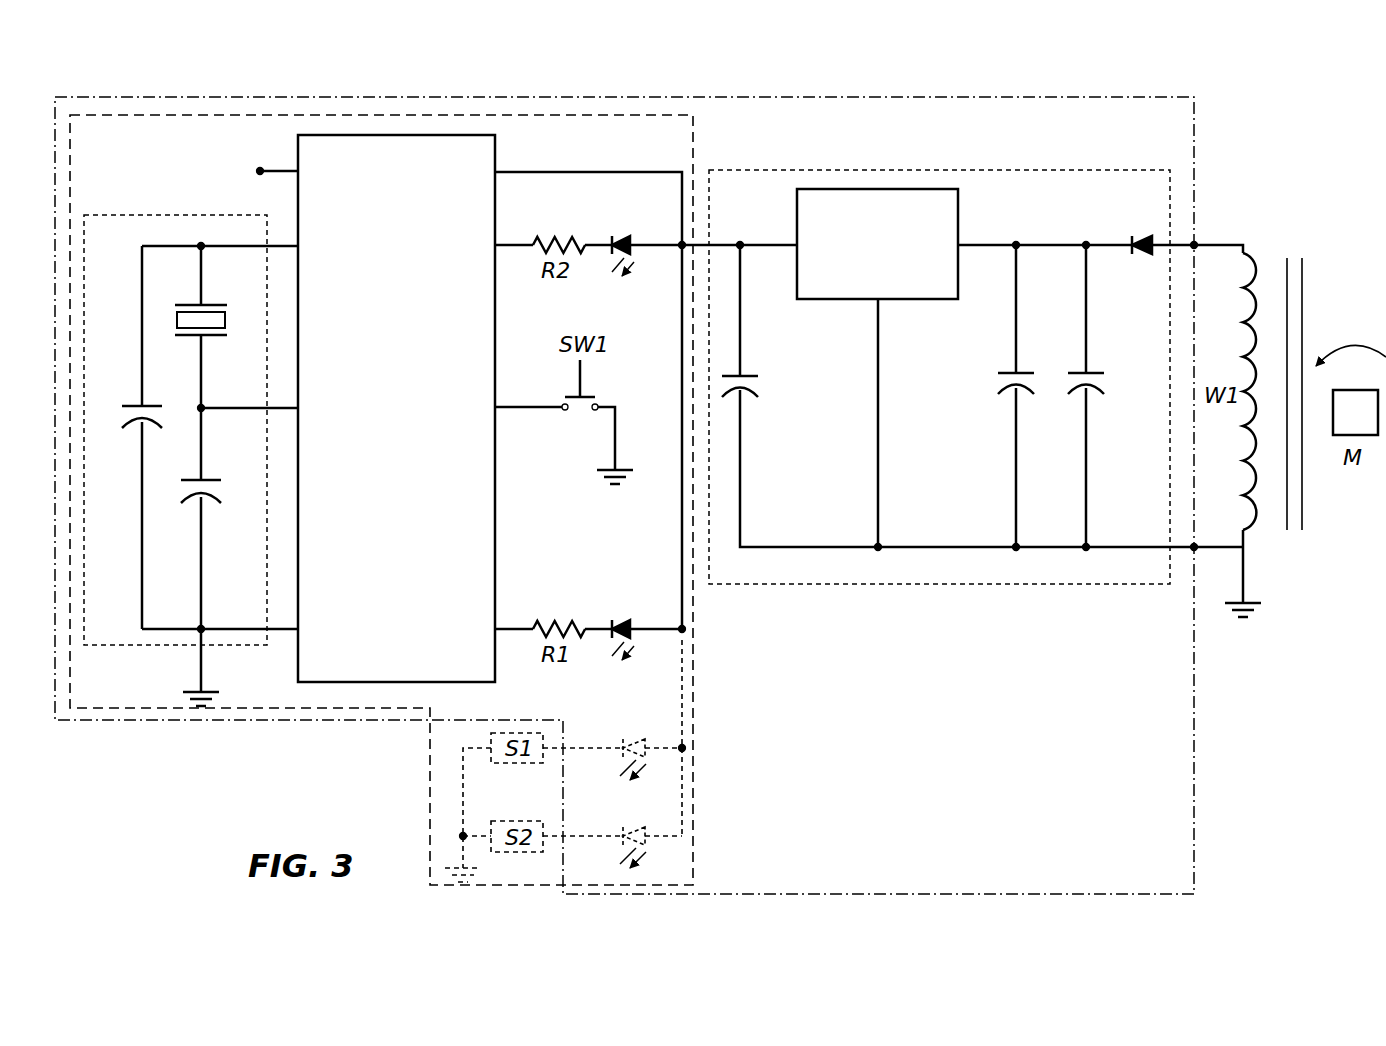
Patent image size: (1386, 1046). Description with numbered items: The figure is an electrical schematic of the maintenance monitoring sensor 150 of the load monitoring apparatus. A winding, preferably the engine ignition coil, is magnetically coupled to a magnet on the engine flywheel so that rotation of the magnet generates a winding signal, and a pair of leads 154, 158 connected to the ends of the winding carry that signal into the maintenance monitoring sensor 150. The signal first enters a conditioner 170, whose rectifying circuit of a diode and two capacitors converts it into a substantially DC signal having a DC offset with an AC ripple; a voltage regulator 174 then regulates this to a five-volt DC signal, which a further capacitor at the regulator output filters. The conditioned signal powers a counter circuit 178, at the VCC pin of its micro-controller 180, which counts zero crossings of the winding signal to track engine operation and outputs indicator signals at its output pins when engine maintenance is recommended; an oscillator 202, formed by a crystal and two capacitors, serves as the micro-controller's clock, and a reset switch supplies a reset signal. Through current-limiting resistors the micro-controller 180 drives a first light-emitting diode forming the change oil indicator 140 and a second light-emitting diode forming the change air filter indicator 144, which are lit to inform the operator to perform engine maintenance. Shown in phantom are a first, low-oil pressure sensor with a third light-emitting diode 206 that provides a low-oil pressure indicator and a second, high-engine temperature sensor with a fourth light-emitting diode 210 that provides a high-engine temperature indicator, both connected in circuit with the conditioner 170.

The maintenance monitoring sensor 150 is at (322, 66).
The counter circuit 178 is at (512, 114).
The oscillator 202 is at (214, 214).
The microcontroller 180 is at (386, 408).
The conditioner 170 is at (976, 357).
The voltage regulator 174 is at (775, 170).
The change air filter indicator 144 is at (632, 262).
The change oil indicator 140 is at (620, 622).
The third light-emitting diode 206 is at (645, 740).
The fourth light-emitting diode 210 is at (645, 843).
The lead 154 is at (1196, 243).
The lead 158 is at (1196, 548).